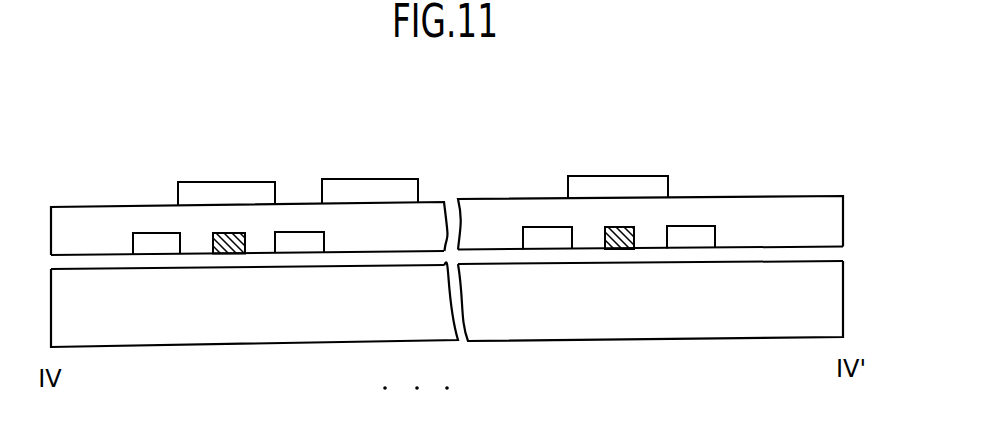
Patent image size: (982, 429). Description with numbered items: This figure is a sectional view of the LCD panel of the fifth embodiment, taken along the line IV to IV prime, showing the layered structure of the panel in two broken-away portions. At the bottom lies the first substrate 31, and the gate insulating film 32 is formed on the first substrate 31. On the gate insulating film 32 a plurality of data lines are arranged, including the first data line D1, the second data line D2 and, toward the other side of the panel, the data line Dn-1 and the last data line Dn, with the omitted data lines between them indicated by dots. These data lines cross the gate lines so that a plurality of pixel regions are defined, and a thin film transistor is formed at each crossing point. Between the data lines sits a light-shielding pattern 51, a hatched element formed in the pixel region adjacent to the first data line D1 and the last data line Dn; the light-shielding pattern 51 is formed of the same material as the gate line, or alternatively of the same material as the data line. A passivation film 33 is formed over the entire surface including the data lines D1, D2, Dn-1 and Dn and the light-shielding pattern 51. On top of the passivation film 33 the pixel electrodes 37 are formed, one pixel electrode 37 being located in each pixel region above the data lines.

The first substrate 31 is at (837, 298).
The gate insulating film 32 is at (837, 251).
The passivation film 33 is at (837, 221).
The pixel electrode 37 is at (372, 187).
The light-shielding pattern 51 is at (228, 245).
The first data line D1 is at (157, 245).
The second data line D2 is at (300, 243).
The (n-1)th data line Dn-1 is at (547, 238).
The last data line Dn is at (693, 238).